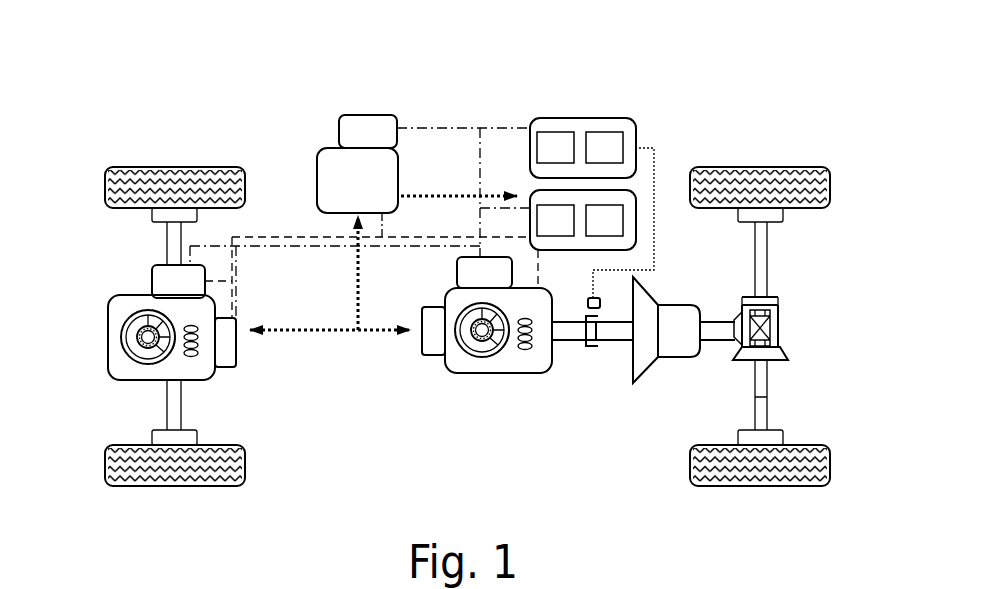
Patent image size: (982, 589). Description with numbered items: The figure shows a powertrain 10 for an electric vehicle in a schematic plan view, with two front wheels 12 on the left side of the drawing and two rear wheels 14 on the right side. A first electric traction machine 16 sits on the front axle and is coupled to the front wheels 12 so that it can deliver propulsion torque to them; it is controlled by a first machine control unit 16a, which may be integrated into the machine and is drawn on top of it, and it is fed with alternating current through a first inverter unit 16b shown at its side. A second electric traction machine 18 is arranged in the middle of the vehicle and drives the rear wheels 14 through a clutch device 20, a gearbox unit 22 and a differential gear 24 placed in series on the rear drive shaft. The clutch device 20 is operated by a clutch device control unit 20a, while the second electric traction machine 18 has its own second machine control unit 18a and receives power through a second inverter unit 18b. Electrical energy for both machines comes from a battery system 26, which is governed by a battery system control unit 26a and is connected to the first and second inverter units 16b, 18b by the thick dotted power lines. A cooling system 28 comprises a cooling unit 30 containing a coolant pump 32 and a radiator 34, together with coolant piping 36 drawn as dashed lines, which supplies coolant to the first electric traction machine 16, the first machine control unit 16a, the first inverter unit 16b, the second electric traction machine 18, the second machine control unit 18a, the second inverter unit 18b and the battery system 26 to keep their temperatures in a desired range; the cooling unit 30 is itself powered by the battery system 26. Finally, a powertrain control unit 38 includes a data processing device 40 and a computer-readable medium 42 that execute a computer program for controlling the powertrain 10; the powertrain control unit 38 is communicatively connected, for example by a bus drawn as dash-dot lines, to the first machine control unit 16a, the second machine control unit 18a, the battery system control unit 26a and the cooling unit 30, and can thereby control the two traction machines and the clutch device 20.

The powertrain 10 is at (621, 103).
The front wheels 12 is at (170, 165).
The rear wheels 14 is at (762, 165).
The first electric traction machine 16 is at (113, 379).
The first machine control unit 16a is at (148, 277).
The first inverter unit 16b is at (230, 367).
The second electric traction machine 18 is at (501, 380).
The second machine control unit 18a is at (483, 268).
The second inverter unit 18b is at (430, 355).
The clutch device 20 is at (591, 352).
The clutch device control unit 20a is at (603, 307).
The gearbox unit 22 is at (672, 358).
The differential gear 24 is at (787, 329).
The battery system 26 is at (324, 143).
The battery system control unit 26a is at (379, 111).
The cooling system 28 is at (675, 183).
The cooling unit 30 is at (636, 228).
The coolant pump 32 is at (555, 220).
The radiator 34 is at (604, 220).
The coolant piping 36 is at (285, 235).
The powertrain control unit 38 is at (644, 133).
The data processing device 40 is at (555, 147).
The computer-readable medium 42 is at (604, 147).